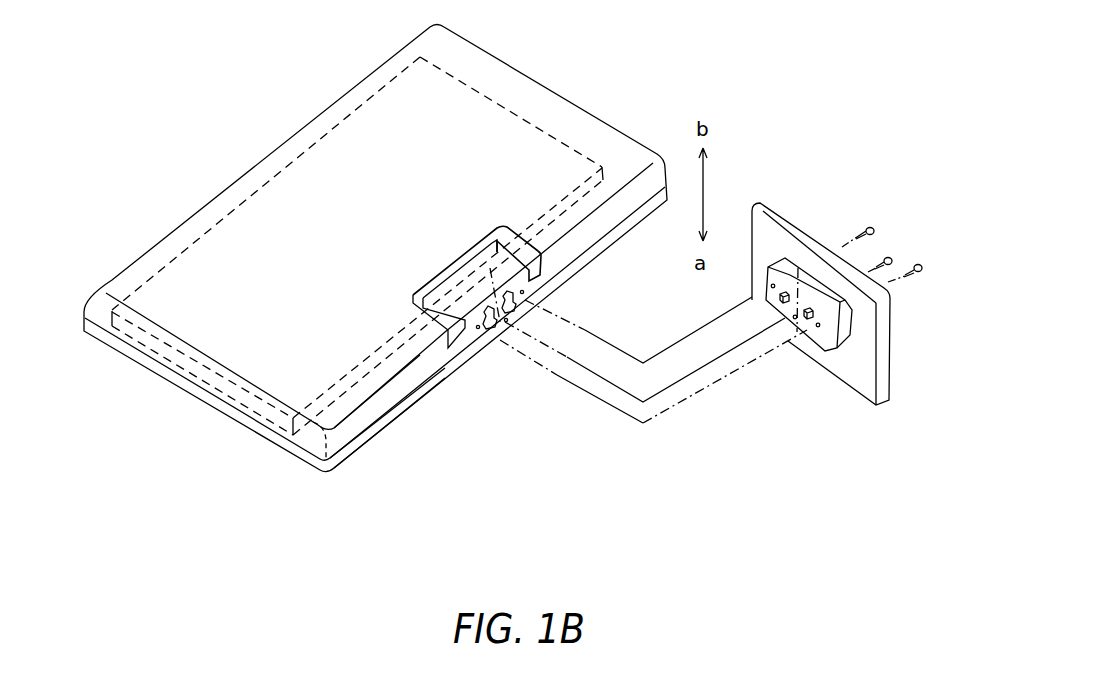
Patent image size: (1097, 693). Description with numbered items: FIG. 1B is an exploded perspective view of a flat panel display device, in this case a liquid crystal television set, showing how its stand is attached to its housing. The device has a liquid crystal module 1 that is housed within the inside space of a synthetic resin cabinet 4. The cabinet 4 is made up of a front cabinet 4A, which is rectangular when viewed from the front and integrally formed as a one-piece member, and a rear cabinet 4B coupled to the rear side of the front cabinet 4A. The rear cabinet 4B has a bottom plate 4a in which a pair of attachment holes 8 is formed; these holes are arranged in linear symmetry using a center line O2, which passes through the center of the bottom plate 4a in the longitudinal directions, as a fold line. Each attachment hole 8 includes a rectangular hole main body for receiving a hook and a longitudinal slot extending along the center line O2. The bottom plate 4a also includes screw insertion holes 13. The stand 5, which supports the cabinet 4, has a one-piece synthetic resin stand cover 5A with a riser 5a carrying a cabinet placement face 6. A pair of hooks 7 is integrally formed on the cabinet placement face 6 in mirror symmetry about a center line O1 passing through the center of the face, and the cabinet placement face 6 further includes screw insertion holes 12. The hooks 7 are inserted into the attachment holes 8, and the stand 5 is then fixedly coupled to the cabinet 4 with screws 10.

The liquid crystal module 1 is at (267, 200).
The cabinet 4 is at (425, 419).
The front cabinet 4A is at (428, 412).
The rear cabinet 4B is at (395, 424).
The bottom plate 4a is at (378, 402).
The center line O2 is at (490, 270).
The attachment holes 8 is at (482, 314).
The screw insertion holes 13 is at (522, 295).
The stand cover 5A is at (821, 274).
The stand 5 is at (821, 304).
The riser 5a is at (842, 337).
The cabinet placement face 6 is at (798, 308).
The hooks 7 is at (780, 300).
The screw insertion holes 12 is at (770, 283).
The center line O1 is at (794, 286).
The screws 10 is at (918, 264).